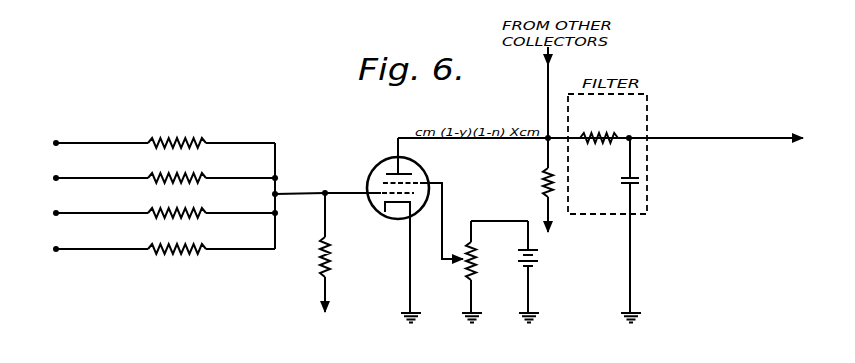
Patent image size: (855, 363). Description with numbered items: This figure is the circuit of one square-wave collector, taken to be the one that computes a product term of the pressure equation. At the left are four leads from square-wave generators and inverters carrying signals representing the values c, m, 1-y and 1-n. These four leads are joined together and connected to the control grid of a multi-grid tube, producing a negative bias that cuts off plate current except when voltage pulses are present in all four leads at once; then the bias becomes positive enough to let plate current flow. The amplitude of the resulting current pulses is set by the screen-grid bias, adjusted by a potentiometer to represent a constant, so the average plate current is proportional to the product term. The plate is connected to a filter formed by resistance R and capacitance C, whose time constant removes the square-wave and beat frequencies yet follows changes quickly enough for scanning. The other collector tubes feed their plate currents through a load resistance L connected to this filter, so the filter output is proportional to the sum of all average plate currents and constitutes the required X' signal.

The square-wave signal lead c is at (154, 143).
The square-wave signal lead m is at (154, 178).
The inverted square-wave signal lead 1-y is at (153, 213).
The inverted square-wave signal lead 1-n is at (153, 249).
The load resistance L is at (540, 185).
The filter resistance R is at (599, 129).
The filter capacitance C is at (626, 230).
The signal output voltage X' is at (725, 128).